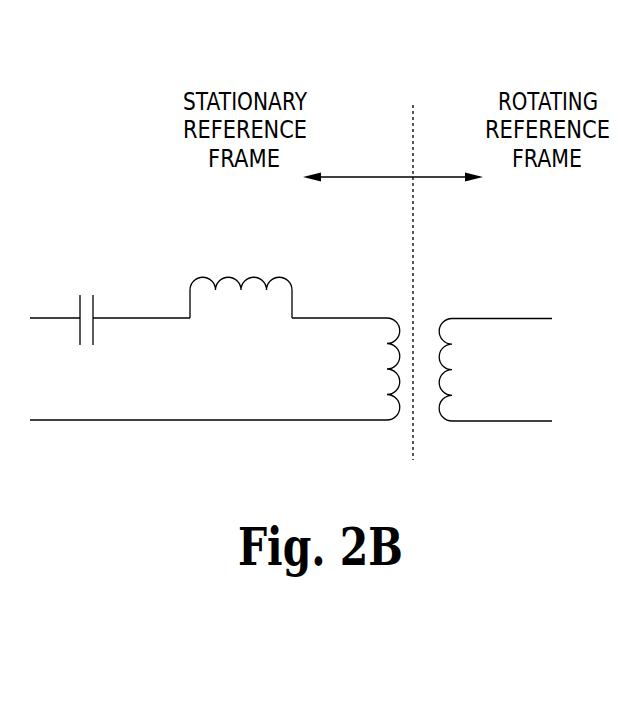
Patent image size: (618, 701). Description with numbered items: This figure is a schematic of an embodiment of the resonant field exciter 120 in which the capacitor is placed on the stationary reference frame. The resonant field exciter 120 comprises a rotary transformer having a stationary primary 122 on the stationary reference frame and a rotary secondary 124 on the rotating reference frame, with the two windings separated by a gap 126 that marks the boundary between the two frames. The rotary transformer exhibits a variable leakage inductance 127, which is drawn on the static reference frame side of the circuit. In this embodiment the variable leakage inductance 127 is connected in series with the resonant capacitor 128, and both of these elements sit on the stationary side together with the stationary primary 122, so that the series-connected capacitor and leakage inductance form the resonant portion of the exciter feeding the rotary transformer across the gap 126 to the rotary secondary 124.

The resonant field exciter 120 is at (404, 70).
The stationary primary 122 is at (388, 318).
The rotary secondary 124 is at (452, 318).
The gap 126 is at (426, 430).
The variable leakage inductance 127 is at (232, 278).
The resonant capacitor 128 is at (92, 296).